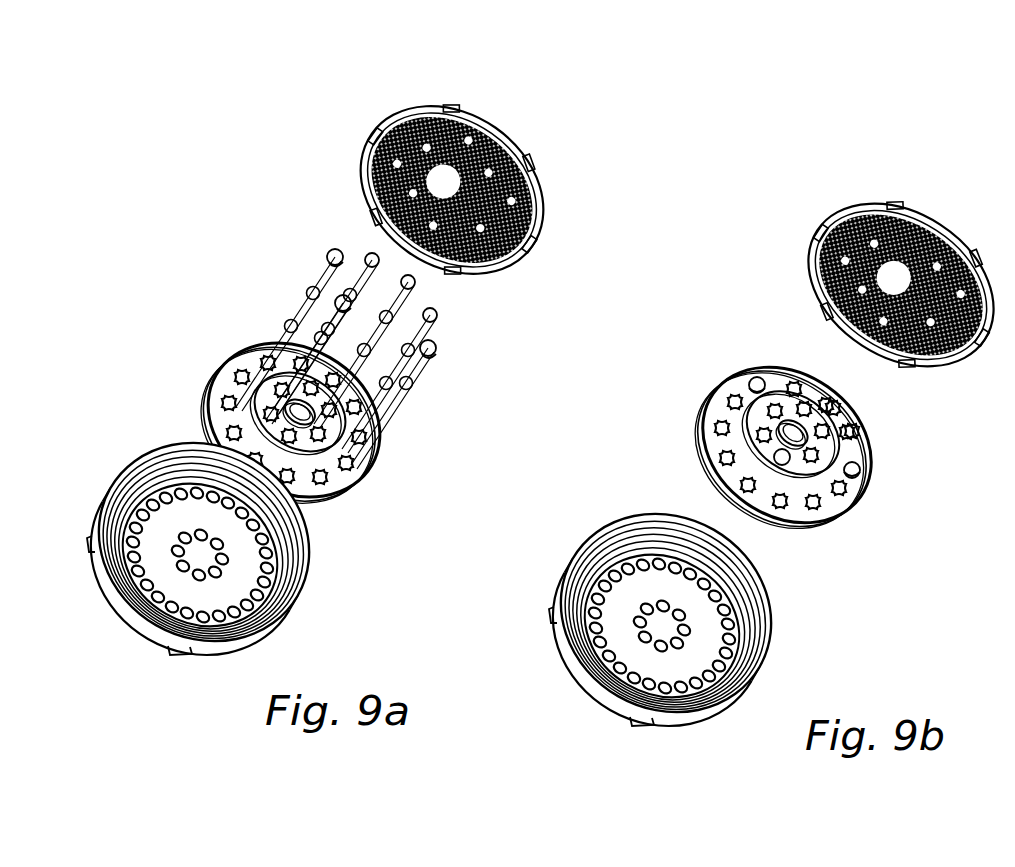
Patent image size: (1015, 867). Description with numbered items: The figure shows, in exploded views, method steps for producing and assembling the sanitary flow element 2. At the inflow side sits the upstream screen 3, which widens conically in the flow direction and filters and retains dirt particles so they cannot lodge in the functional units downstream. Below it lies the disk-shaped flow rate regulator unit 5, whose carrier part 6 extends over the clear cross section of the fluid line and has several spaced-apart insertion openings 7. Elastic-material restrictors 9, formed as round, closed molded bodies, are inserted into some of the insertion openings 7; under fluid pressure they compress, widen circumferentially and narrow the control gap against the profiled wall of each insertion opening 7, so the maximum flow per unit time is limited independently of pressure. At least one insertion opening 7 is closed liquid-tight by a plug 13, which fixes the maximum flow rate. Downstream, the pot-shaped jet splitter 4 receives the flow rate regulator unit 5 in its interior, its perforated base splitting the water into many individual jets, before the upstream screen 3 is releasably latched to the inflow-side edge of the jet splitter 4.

In FIG. 9A, the sanitary flow element 2 is at (260, 150).
In FIG. 9B, the sanitary flow element 2 is at (739, 182).
In FIG. 9A, the inflow-side upstream screen 3 is at (532, 146).
In FIG. 9B, the inflow-side upstream screen 3 is at (972, 252).
In FIG. 9A, the jet splitter 4 is at (350, 573).
In FIG. 9B, the jet splitter 4 is at (784, 661).
In FIG. 9A, the flow rate regulator unit 5 is at (435, 405).
In FIG. 9B, the flow rate regulator unit 5 is at (1014, 522).
In FIG. 9A, the carrier part 6 is at (372, 472).
In FIG. 9B, the carrier part 6 is at (812, 520).
In FIG. 9A, the insertion openings 7 is at (210, 414).
In FIG. 9A, the elastic-material restrictor 9 is at (415, 282).
In FIG. 9B, the elastic-material restrictor 9 is at (840, 410).
In FIG. 9A, the plug 13 is at (333, 250).
In FIG. 9B, the plug 13 is at (758, 376).